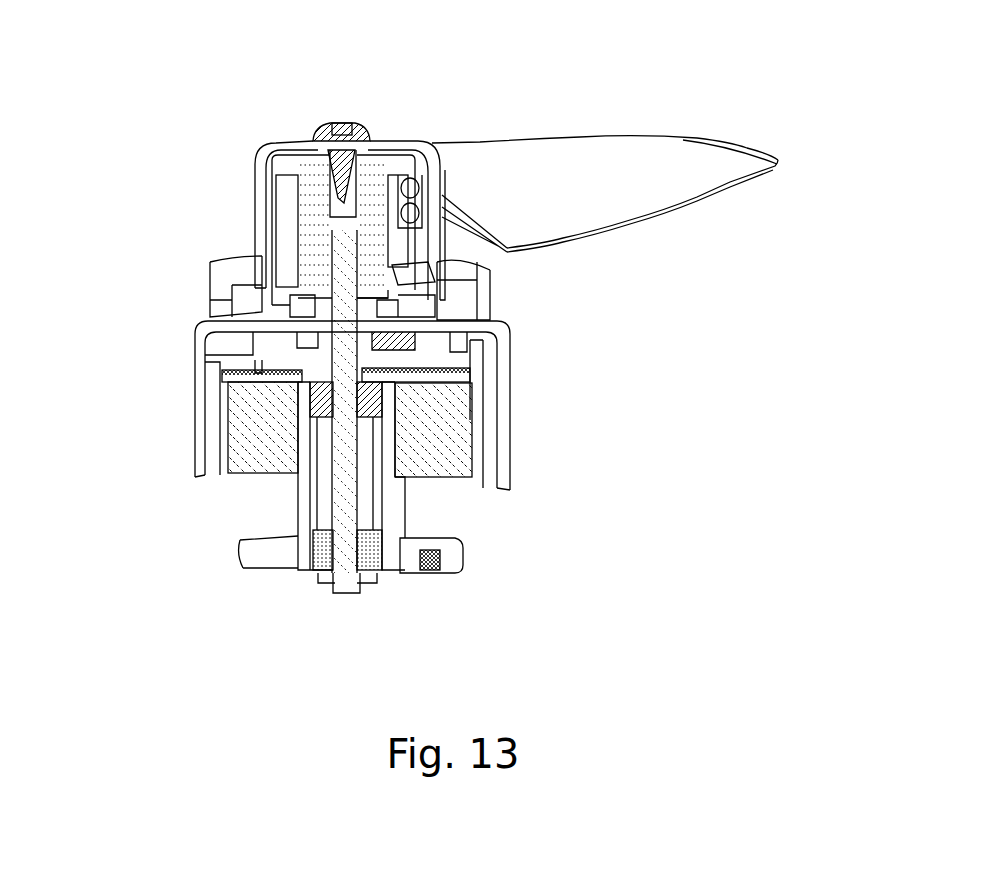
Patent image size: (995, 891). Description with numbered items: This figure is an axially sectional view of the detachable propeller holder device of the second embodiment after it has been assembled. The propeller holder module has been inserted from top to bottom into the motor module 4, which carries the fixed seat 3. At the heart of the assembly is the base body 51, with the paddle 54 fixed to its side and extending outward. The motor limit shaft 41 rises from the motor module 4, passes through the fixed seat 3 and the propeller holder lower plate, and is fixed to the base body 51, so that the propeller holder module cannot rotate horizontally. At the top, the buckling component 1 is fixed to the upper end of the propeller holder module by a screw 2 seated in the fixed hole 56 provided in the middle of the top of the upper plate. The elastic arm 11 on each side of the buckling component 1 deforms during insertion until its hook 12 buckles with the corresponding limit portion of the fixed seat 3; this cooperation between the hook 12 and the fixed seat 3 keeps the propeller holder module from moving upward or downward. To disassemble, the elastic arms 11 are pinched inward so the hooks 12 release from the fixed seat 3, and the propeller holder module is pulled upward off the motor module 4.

The buckling component 1 is at (435, 143).
The screw 2 is at (325, 130).
The fixed seat 3 is at (492, 297).
The motor module 4 is at (503, 423).
The elastic arm 11 is at (265, 213).
The hook 12 is at (237, 288).
The motor limit shaft 41 is at (350, 432).
The base body 51 is at (288, 163).
The paddle 54 is at (600, 188).
The fixed hole 56 is at (347, 210).